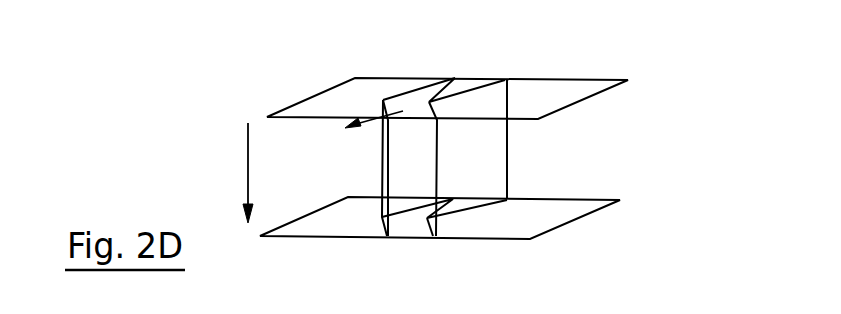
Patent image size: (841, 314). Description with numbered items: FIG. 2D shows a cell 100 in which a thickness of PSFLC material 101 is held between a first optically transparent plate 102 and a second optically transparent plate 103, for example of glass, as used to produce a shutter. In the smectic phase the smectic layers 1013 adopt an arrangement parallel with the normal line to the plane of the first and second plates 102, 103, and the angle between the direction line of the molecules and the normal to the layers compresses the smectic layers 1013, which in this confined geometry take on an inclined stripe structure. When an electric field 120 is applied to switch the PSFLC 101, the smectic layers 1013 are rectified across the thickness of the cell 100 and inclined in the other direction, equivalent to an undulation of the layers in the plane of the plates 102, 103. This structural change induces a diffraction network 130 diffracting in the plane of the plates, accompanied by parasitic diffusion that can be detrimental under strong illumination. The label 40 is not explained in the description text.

The cell 100 is at (300, 85).
The PSFLC material 101 is at (607, 137).
The first optically transparent plate 102 is at (545, 80).
The second optically transparent plate 103 is at (582, 287).
The smectic layers 1013 is at (505, 143).
The electric field 120 is at (245, 173).
The diffraction network 130 is at (430, 80).
The liquid crystal layer 40 is at (302, 304).